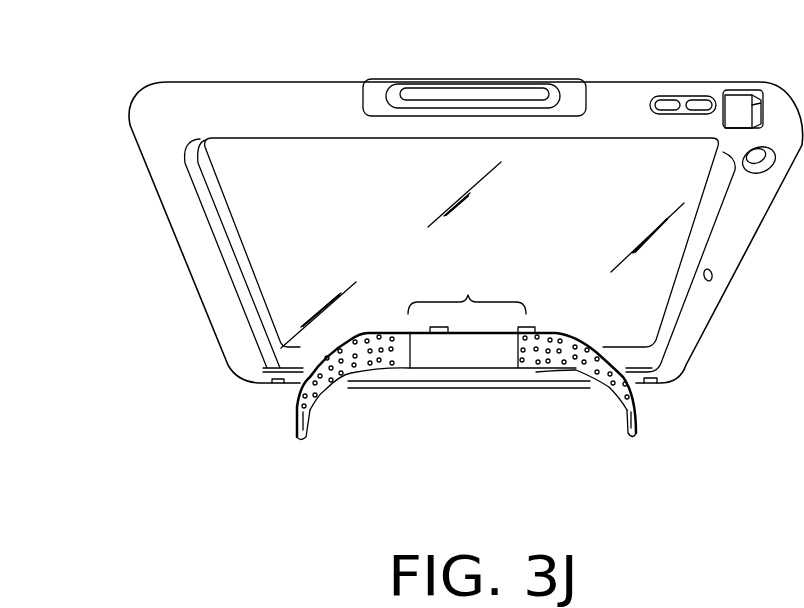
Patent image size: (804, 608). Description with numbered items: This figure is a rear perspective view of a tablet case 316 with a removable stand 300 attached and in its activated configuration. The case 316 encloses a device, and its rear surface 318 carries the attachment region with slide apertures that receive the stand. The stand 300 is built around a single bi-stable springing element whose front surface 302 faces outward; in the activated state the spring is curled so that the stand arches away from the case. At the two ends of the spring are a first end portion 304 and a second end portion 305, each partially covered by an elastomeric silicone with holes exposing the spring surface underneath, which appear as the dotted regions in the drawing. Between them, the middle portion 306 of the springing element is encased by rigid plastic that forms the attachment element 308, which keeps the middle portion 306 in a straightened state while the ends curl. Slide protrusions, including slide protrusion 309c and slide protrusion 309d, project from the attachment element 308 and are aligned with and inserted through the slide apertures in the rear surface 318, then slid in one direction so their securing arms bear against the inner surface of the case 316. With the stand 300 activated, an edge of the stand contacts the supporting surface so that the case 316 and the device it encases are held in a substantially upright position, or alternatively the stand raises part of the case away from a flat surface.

The removable stand 300 is at (471, 279).
The front surface 302 is at (338, 373).
The first end portion 304 is at (310, 408).
The second end portion 305 is at (633, 417).
The middle portion 306 is at (468, 300).
The attachment element 308 is at (478, 353).
The slide protrusion 309c is at (441, 333).
The slide protrusion 309d is at (533, 336).
The tablet case 316 is at (414, 196).
The rear surface 318 is at (270, 190).